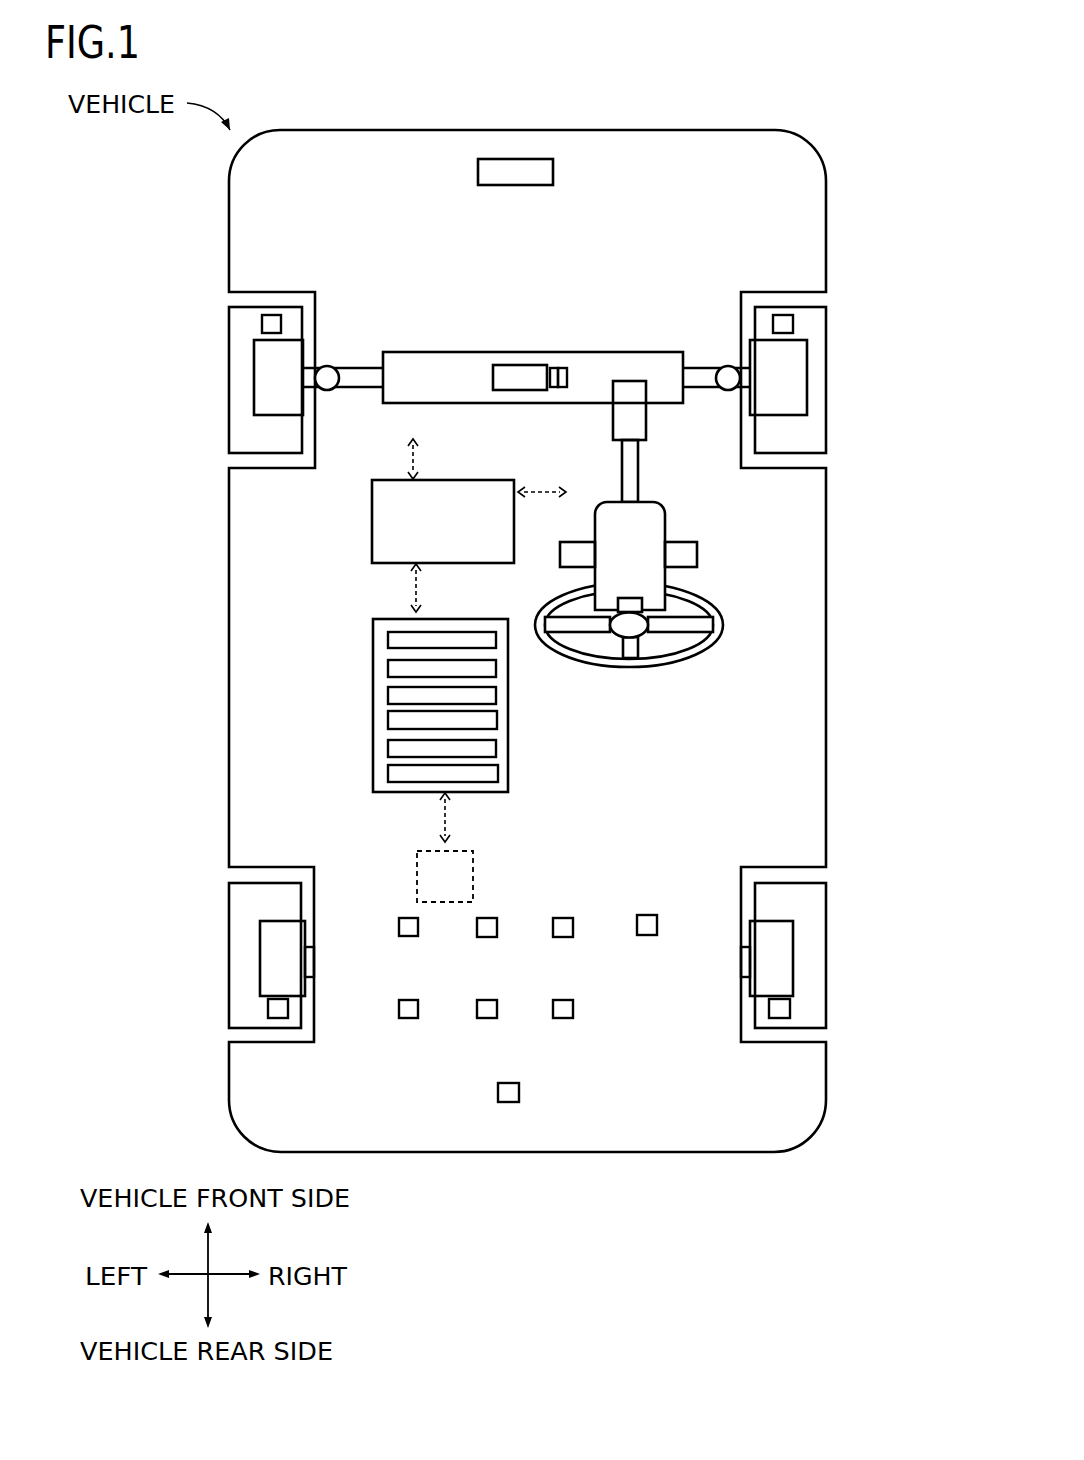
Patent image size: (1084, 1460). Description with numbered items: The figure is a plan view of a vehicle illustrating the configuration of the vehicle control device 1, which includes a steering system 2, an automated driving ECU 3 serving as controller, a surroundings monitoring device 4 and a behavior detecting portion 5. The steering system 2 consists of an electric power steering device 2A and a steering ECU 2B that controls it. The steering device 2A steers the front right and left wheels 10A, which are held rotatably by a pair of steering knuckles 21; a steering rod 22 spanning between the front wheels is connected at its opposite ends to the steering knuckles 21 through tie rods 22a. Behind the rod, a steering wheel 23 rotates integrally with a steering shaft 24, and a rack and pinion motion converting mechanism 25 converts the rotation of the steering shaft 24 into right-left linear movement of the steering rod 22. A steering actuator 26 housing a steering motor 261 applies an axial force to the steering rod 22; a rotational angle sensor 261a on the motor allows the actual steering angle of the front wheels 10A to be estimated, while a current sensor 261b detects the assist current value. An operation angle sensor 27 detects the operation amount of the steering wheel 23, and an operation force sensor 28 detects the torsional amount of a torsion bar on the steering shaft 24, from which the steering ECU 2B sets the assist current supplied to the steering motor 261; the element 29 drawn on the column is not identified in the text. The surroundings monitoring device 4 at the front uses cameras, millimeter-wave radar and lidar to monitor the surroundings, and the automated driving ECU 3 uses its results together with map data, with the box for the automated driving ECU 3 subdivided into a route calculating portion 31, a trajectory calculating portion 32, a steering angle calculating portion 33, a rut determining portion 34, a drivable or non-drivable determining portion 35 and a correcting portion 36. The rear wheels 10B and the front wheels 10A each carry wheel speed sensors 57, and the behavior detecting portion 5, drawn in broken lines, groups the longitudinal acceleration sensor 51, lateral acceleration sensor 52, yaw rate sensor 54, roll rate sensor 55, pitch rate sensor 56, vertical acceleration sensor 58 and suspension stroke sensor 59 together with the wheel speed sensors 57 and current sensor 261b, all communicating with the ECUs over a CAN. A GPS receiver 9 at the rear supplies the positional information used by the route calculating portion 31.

The vehicle control device 1 is at (200, 520).
The steering system 2 is at (323, 215).
The steering device 2A is at (452, 285).
The steering ECU 2B is at (387, 480).
The automated driving ECU 3 is at (404, 704).
The surroundings monitoring device 4 is at (514, 159).
The behavior detecting portion 5 is at (462, 877).
The GPS receiver 9 is at (508, 1103).
The front wheels 10A is at (527, 666).
The rear wheels 10B is at (238, 963).
The steering knuckles 21 is at (254, 355).
The steering rod 22 is at (526, 307).
The tie rods 22a is at (308, 375).
The steering wheel 23 is at (654, 604).
The steering shaft 24 is at (630, 603).
The motion converting mechanism 25 is at (623, 362).
The steering actuator 26 is at (453, 338).
The steering motor 261 is at (517, 373).
The rotational angle sensor 261a is at (553, 373).
The current sensor 261b is at (558, 373).
The operation angle sensor 27 is at (578, 552).
The operation force sensor 28 is at (685, 556).
The steering shaft 29 is at (630, 453).
The route calculating portion 31 is at (397, 642).
The trajectory calculating portion 32 is at (397, 668).
The steering angle calculating portion 33 is at (397, 697).
The rut determining portion 34 is at (396, 722).
The drivable or non-drivable determining portion 35 is at (397, 751).
The correcting portion 36 is at (402, 773).
The longitudinal acceleration sensor 51 is at (405, 937).
The lateral acceleration sensor 52 is at (487, 937).
The yaw rate sensor 54 is at (563, 937).
The roll rate sensor 55 is at (647, 935).
The pitch rate sensor 56 is at (405, 1019).
The wheel speed sensors 57 is at (270, 323).
The vertical acceleration sensor 58 is at (487, 1019).
The suspension stroke sensor 59 is at (563, 1019).